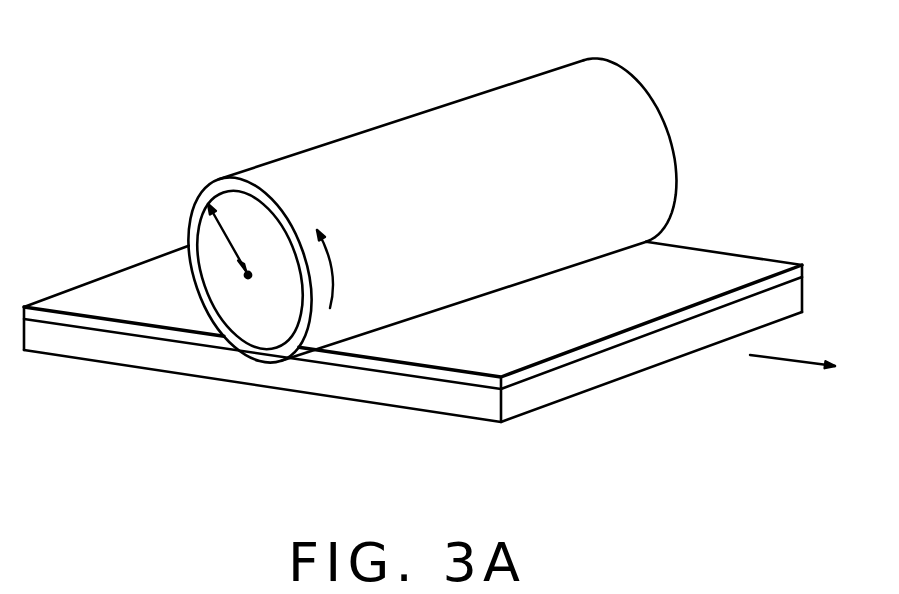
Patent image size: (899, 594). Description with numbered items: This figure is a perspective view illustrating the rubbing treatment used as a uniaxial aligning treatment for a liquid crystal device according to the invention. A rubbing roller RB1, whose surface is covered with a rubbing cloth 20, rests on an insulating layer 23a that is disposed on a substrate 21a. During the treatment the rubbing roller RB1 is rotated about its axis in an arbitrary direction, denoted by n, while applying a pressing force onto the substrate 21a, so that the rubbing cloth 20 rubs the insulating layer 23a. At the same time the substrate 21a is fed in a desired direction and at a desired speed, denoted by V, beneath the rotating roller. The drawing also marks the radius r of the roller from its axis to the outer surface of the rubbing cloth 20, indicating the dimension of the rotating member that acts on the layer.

The rubbing cloth 20 is at (442, 100).
The rubbing roller RB1 is at (638, 75).
The substrate 21a is at (67, 340).
The insulating layer 23a is at (72, 305).
The roller radius r is at (230, 235).
The rotation direction of the rubbing roller n is at (336, 269).
The feed speed of the substrate V is at (792, 376).